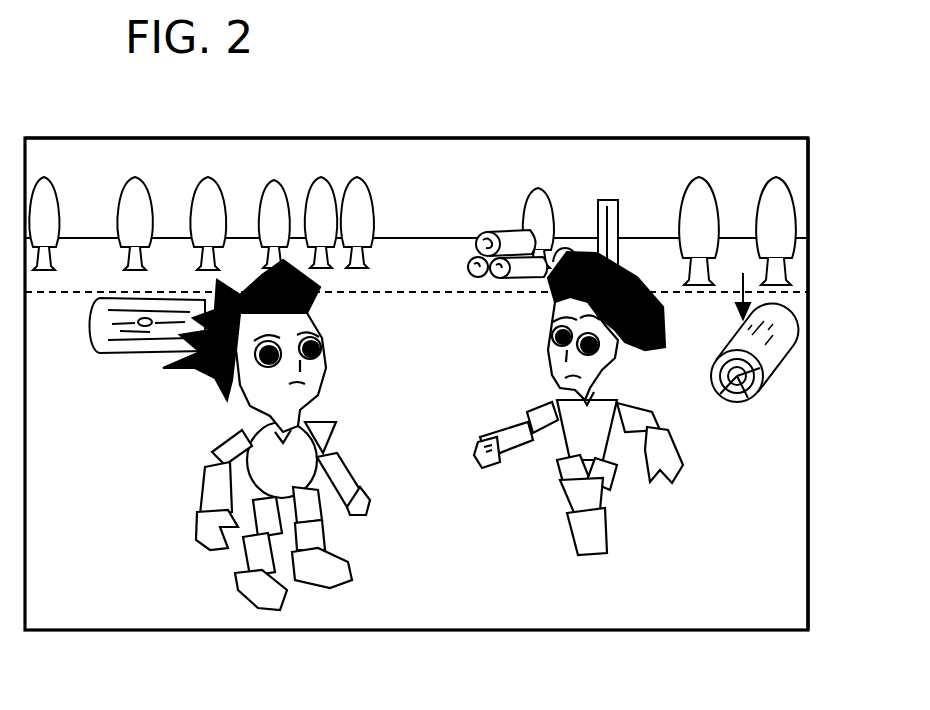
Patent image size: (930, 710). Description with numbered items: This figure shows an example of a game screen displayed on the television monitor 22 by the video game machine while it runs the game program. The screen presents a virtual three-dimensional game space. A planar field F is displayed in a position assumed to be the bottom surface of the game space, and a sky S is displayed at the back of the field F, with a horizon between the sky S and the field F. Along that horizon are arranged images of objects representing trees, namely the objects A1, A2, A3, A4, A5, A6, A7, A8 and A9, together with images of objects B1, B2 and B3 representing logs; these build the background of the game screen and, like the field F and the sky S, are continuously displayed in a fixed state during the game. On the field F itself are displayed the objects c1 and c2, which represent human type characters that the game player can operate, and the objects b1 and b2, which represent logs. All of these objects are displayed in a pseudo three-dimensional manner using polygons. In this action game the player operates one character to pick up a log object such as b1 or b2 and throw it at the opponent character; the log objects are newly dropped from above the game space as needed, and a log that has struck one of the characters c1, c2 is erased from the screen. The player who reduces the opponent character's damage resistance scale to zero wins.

The television monitor 22 is at (810, 183).
The sky S is at (457, 141).
The planar field F is at (808, 513).
The object representing tree A1 is at (54, 182).
The object representing tree A2 is at (138, 182).
The object representing tree A3 is at (211, 182).
The object representing tree A4 is at (270, 184).
The object representing tree A5 is at (323, 184).
The object representing tree A6 is at (362, 186).
The object representing tree A7 is at (512, 188).
The object representing tree A8 is at (686, 184).
The object representing tree A9 is at (762, 184).
The object representing log B1 is at (489, 232).
The object representing log B2 is at (568, 240).
The object representing log B3 is at (609, 198).
The object representing log b1 is at (118, 350).
The object representing log b2 is at (750, 400).
The object representing human type character c1 is at (342, 462).
The object representing human type character c2 is at (665, 442).